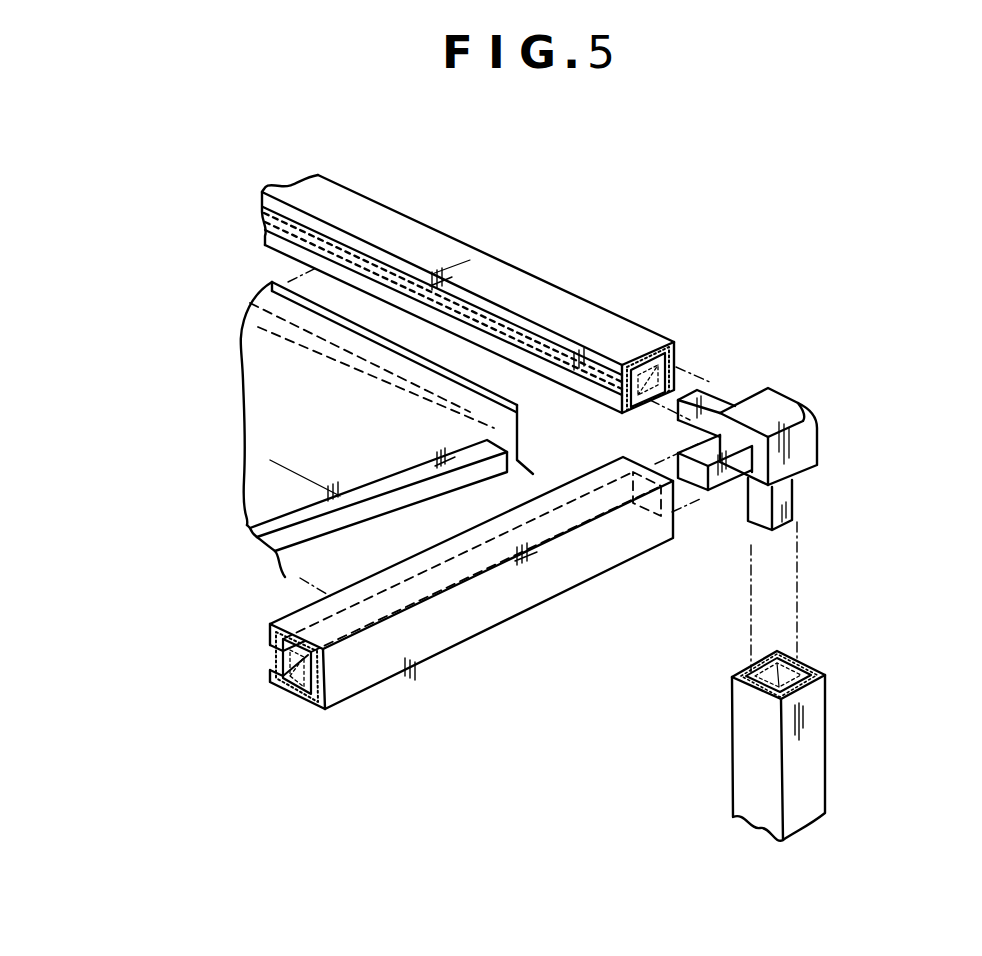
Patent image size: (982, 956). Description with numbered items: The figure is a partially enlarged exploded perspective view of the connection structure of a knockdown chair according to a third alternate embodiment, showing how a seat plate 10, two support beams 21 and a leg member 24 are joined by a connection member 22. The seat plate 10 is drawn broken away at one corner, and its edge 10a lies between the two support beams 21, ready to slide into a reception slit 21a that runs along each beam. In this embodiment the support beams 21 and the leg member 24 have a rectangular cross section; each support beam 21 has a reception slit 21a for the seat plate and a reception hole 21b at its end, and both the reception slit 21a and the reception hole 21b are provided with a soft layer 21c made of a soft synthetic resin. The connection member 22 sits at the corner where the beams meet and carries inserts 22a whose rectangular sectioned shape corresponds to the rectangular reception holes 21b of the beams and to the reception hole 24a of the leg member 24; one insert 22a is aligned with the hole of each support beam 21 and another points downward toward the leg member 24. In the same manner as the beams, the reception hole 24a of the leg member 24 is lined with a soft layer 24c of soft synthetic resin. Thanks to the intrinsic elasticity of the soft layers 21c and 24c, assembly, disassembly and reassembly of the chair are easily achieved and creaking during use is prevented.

The seat plate 10 is at (258, 408).
The seat plate edge 10a is at (280, 540).
The support beam 21 is at (560, 302).
The reception slit 21a is at (264, 230).
The reception hole 21b is at (676, 367).
The soft layer 21c is at (651, 366).
The connection member 22 is at (788, 408).
The insert 22a is at (716, 397).
The leg member 24 is at (748, 703).
The reception hole 24a is at (800, 687).
The soft layer 24c is at (797, 703).